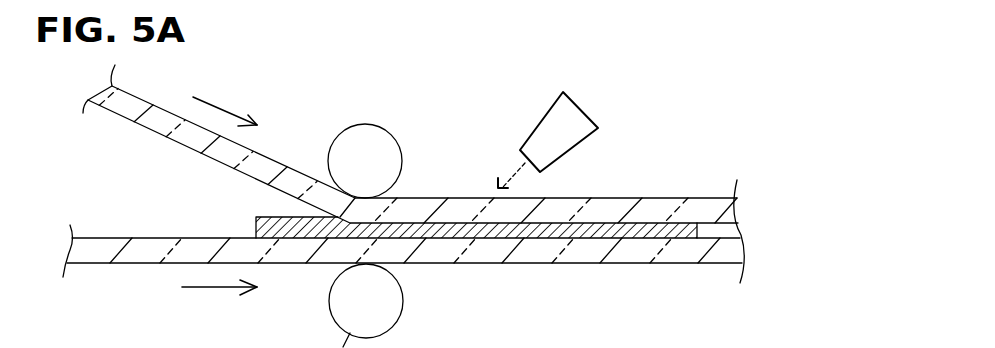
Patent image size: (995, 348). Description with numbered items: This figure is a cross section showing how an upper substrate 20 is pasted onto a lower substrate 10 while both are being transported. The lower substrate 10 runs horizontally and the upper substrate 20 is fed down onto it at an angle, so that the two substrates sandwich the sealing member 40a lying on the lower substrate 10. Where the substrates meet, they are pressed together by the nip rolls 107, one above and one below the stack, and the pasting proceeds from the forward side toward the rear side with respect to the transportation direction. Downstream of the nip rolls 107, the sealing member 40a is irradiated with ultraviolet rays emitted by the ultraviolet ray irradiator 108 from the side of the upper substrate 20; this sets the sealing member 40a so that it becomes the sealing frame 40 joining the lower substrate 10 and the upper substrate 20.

The lower substrate 10 is at (403, 231).
The upper substrate 20 is at (410, 144).
The sealing frame 40 is at (523, 201).
The sealing member 40a is at (251, 214).
The nip rolls 107 is at (340, 144).
The ultraviolet ray irradiator 108 is at (539, 132).